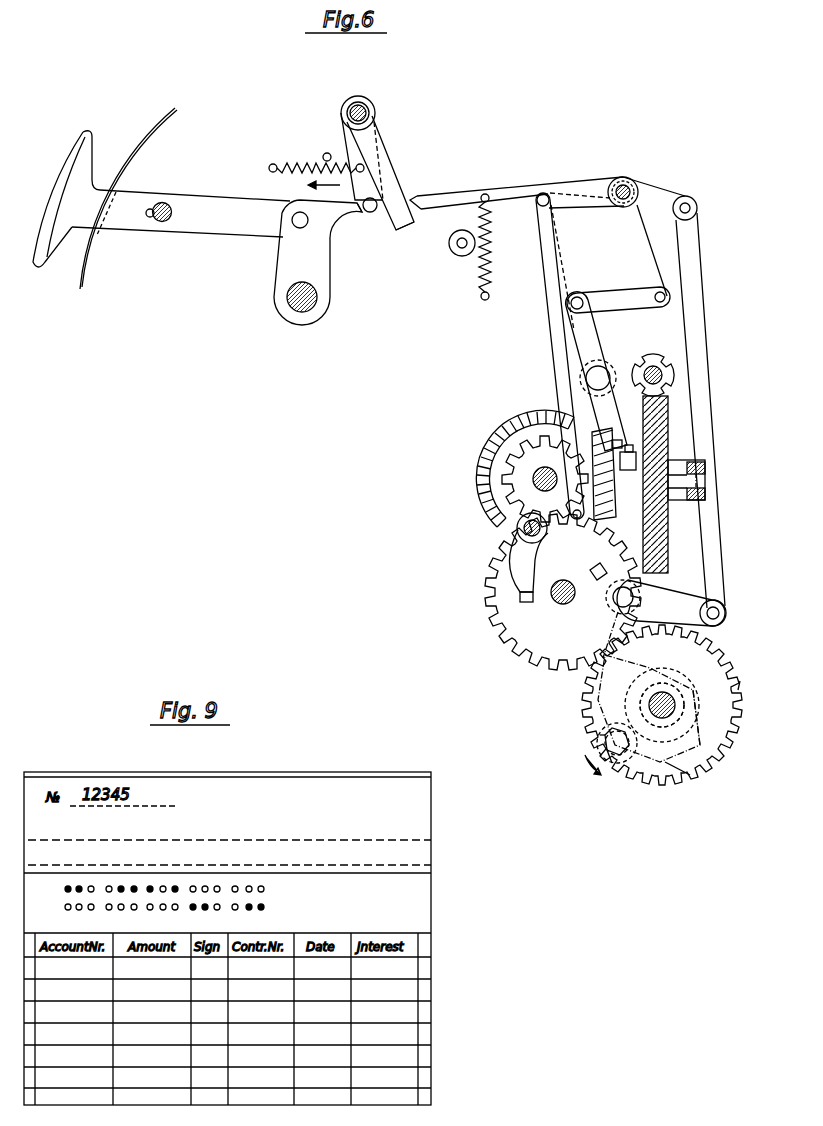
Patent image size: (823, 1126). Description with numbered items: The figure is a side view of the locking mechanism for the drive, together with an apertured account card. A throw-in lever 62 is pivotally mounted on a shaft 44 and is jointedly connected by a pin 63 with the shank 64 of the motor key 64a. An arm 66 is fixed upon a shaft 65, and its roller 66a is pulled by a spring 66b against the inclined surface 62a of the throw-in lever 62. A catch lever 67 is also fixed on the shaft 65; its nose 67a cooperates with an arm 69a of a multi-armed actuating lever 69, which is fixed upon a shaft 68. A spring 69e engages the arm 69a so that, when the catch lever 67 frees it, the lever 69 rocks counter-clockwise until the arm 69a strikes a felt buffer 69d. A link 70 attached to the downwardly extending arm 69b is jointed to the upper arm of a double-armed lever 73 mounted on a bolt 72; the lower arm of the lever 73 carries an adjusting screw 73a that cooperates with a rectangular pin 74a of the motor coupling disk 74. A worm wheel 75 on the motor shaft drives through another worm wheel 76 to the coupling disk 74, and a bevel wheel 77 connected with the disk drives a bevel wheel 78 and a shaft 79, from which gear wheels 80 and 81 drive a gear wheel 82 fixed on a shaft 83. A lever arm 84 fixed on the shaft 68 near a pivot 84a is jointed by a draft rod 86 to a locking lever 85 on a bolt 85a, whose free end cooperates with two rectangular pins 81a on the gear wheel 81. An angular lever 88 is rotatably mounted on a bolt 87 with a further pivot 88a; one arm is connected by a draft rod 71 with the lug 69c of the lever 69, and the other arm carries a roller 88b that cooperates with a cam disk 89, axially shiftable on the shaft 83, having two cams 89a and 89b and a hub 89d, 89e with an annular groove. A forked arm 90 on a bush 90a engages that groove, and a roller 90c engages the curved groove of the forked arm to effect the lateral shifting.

The shaft 44 is at (305, 308).
The throw-in lever 62 is at (277, 259).
The inclined surface 62a is at (362, 215).
The pin 63 is at (298, 216).
The shank 64 is at (207, 222).
The motor key 64a is at (76, 156).
The shaft 65 is at (368, 110).
The arm 66 is at (350, 142).
The roller 66a is at (372, 212).
The spring 66b is at (317, 165).
The catch lever 67 is at (391, 168).
The nose 67a is at (417, 222).
The shaft 68 is at (626, 183).
The multi-armed actuating lever 69 is at (657, 195).
The arm 69a is at (448, 192).
The downwardly extending arm 69b is at (650, 245).
The lug 69c is at (695, 206).
The felt buffer 69d is at (458, 252).
The spring 69e is at (493, 251).
The link 70 is at (617, 297).
The draft rod 71 is at (707, 398).
The bolt 72 is at (599, 378).
The double-armed lever 73 is at (593, 341).
The adjusting screw 73a is at (636, 447).
The motor coupling disk 74 is at (640, 451).
The rectangular pin 74a is at (700, 470).
The worm wheel 75 is at (648, 363).
The worm wheel 76 is at (667, 428).
The bevel wheel 77 is at (603, 506).
The bevel wheel 78 is at (488, 442).
The shaft 79 is at (538, 479).
The gear wheel 80 is at (540, 452).
The gear wheel 81 is at (527, 625).
The rectangular pins 81a is at (513, 598).
The gear wheel 82 is at (678, 767).
The shaft 83 is at (675, 700).
The lever arm 84 is at (582, 205).
The pivot 84a is at (540, 204).
The locking lever 85 is at (517, 558).
The bolt 85a is at (523, 533).
The draft rod 86 is at (565, 337).
The bolt 87 is at (633, 597).
The angular lever 88 is at (688, 602).
The pivot 88a is at (720, 613).
The roller 88b is at (602, 660).
The cam disk 89 is at (690, 702).
The cam 89a is at (618, 675).
The cam 89b is at (692, 757).
The hub 89d is at (663, 690).
The hub 89e is at (673, 693).
The forked arm 90 is at (645, 773).
The bush 90a is at (612, 763).
The roller 90c is at (603, 735).